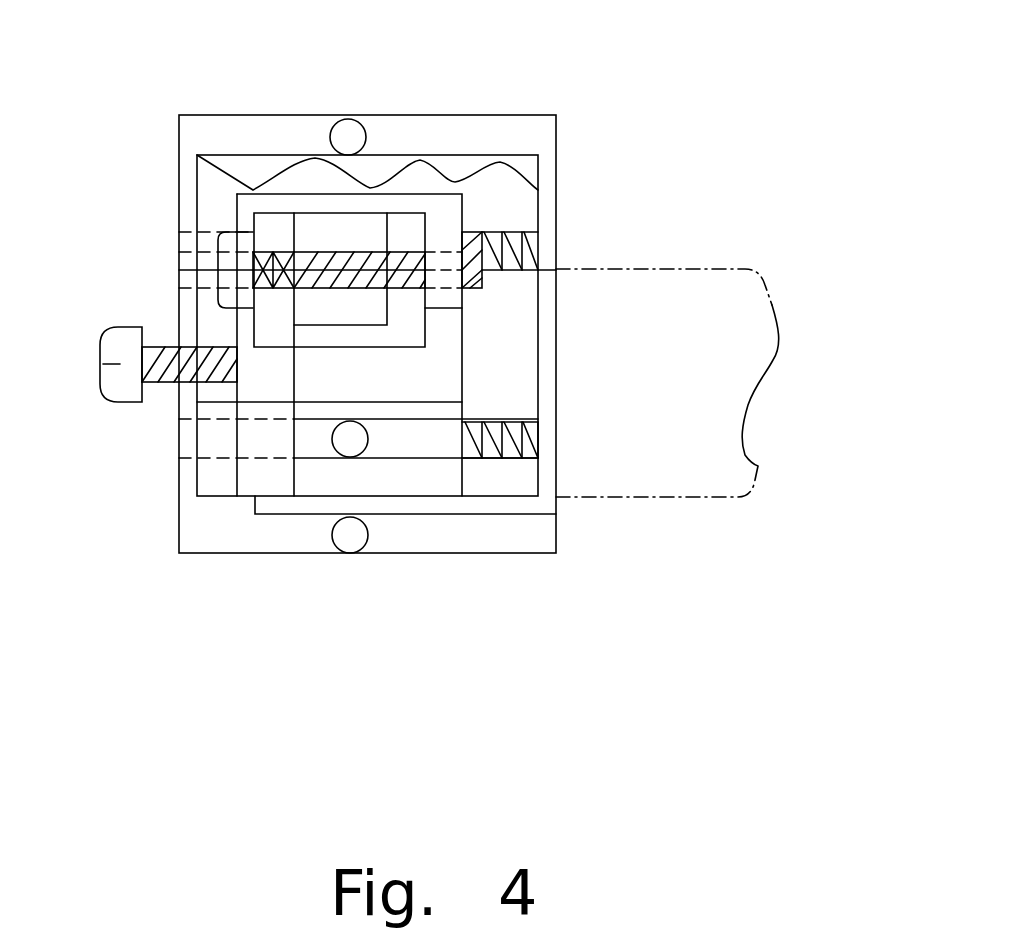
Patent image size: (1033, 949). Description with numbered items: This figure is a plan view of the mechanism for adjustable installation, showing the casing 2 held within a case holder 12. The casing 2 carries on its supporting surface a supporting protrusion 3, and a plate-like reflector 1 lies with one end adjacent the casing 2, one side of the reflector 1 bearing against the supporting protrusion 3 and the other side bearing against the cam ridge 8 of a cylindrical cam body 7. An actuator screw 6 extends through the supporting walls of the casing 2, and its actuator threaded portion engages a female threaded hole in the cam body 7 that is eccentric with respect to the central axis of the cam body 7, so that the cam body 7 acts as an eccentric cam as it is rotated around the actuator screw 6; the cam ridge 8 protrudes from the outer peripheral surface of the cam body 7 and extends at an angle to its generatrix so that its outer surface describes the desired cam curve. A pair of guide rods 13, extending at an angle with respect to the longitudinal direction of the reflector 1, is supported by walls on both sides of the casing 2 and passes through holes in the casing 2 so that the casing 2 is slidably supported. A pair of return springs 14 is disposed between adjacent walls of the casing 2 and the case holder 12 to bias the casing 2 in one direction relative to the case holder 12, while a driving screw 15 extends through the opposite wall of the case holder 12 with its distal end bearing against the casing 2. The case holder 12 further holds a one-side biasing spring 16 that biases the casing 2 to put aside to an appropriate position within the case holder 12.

The reflector 1 is at (765, 370).
The casing 2 is at (248, 208).
The supporting protrusion 3 is at (340, 452).
The actuator screw 6 is at (224, 295).
The cylindrical cam body 7 is at (327, 240).
The cam ridge 8 is at (240, 327).
The case holder 12 is at (205, 540).
The guide rods 13 is at (455, 240).
The return springs 14 is at (530, 247).
The driving screw 15 is at (165, 372).
The one-side biasing spring 16 is at (403, 160).